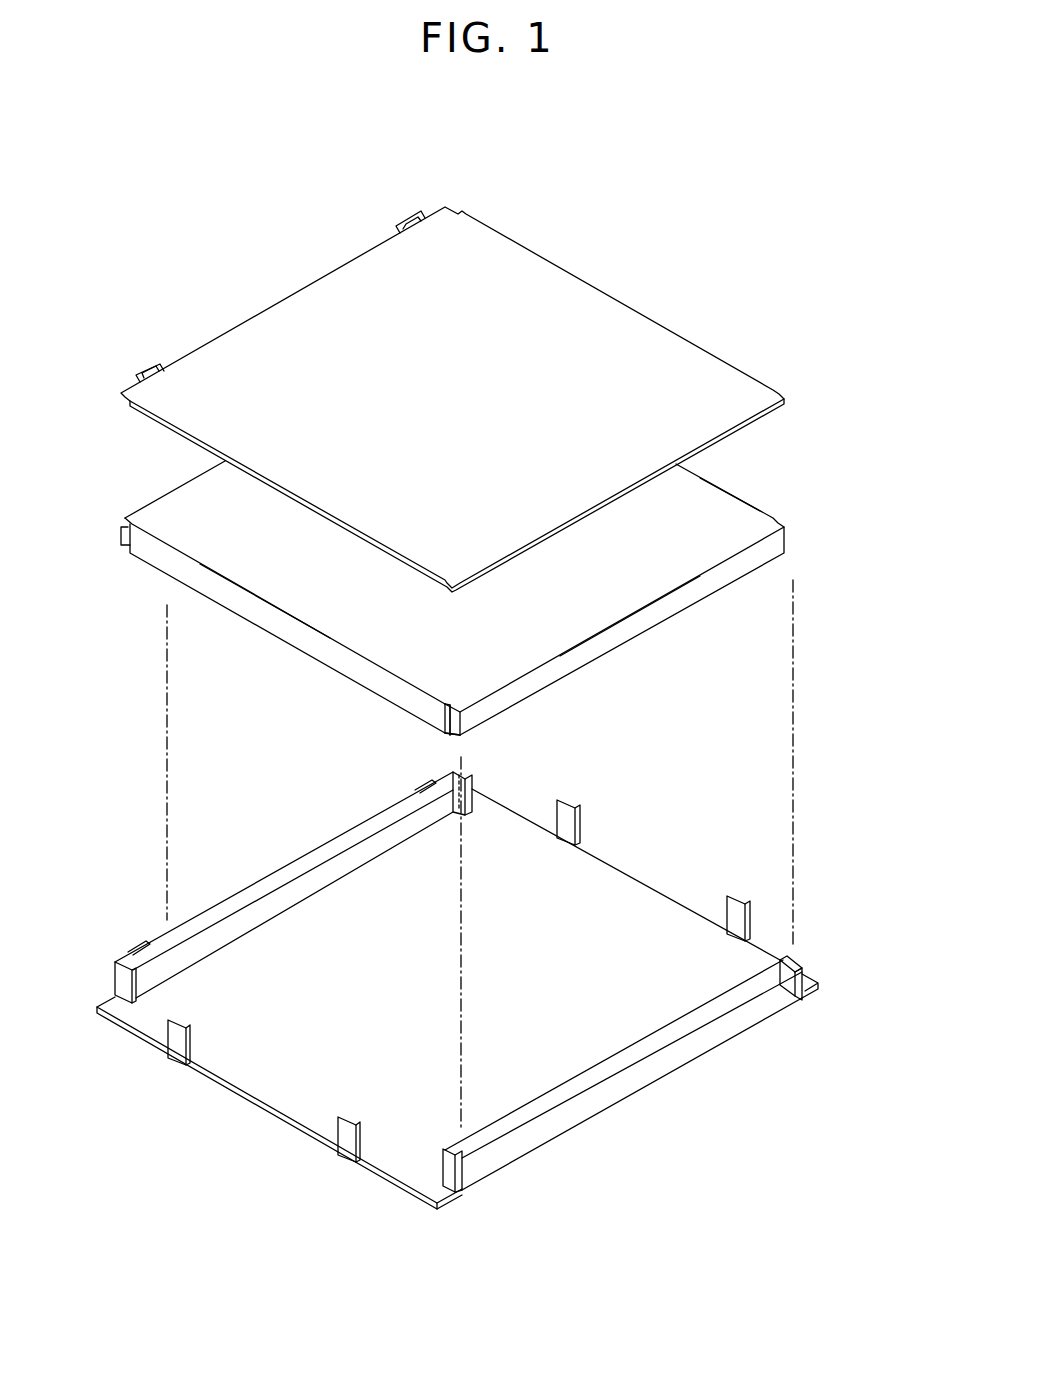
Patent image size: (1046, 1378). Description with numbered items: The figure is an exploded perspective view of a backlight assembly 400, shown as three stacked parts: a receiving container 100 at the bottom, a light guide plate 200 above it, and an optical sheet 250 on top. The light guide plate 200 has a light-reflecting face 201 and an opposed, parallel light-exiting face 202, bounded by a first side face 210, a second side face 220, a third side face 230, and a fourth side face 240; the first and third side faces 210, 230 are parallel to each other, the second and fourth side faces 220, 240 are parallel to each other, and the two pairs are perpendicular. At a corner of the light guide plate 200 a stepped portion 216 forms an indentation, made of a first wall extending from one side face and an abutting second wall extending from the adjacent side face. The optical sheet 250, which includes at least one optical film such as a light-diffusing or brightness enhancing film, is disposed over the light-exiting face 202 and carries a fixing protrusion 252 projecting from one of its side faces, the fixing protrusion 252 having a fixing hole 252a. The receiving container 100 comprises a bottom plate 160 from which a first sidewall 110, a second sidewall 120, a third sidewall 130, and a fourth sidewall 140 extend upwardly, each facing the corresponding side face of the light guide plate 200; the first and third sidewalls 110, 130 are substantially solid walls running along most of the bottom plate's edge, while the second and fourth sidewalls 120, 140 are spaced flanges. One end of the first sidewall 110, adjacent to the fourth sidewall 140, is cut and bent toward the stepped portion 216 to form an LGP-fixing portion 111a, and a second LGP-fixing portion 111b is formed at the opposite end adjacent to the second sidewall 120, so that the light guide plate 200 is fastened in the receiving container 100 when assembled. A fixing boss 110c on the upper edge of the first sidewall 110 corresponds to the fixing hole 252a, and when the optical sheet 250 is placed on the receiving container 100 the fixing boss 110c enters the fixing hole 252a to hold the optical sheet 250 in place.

The backlight assembly 400 is at (488, 129).
The optical sheet 250 is at (632, 275).
The fixing protrusion 252 is at (165, 363).
The fixing hole 252a is at (147, 370).
The light guide plate 200 is at (158, 576).
The first side face 210 is at (143, 492).
The stepped portion 216 is at (121, 533).
The second side face 220 is at (726, 489).
The third side face 230 is at (622, 633).
The fourth side face 240 is at (292, 633).
The light-exiting face 202 is at (447, 704).
The light-reflecting face 201 is at (447, 735).
The receiving container 100 is at (213, 1092).
The first sidewall 110 is at (292, 887).
The LGP-fixing portion 111a is at (118, 978).
The second LGP-fixing portion 111b is at (468, 800).
The fixing boss 110c is at (145, 937).
The second sidewall 120 is at (728, 912).
The third sidewall 130 is at (740, 1028).
The fourth sidewall 140 is at (347, 1145).
The bottom plate 160 is at (399, 1160).